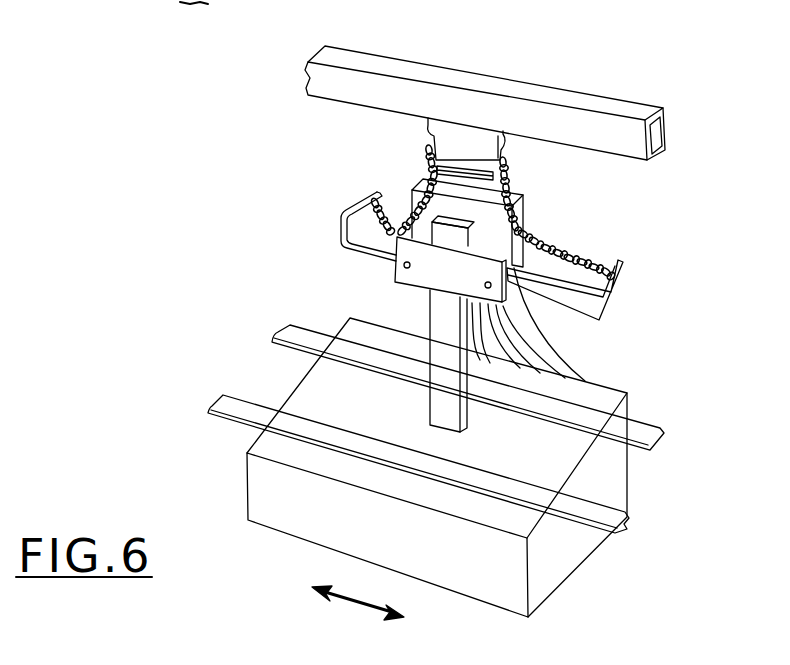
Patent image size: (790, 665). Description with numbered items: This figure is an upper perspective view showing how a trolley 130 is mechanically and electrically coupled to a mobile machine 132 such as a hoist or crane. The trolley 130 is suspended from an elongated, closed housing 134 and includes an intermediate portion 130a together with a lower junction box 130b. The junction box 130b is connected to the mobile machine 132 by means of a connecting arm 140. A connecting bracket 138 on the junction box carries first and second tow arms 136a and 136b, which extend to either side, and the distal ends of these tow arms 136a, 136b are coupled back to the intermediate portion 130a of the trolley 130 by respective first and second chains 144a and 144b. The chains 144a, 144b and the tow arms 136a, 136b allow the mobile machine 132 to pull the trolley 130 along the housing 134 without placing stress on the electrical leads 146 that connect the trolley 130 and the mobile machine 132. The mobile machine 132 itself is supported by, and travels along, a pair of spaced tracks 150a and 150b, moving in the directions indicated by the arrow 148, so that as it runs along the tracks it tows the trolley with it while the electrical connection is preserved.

The trolley 130 is at (410, 124).
The intermediate portion 130a is at (500, 152).
The lower junction box 130b is at (528, 212).
The mobile machine 132 is at (414, 546).
The elongated, closed housing 134 is at (515, 90).
The first tow arm 136a is at (343, 222).
The second tow arm 136b is at (618, 288).
The connecting bracket 138 is at (475, 291).
The connecting arm 140 is at (443, 343).
The first chain 144a is at (405, 218).
The second chain 144b is at (590, 254).
The electrical leads 146 is at (580, 349).
The arrow 148 is at (343, 600).
The first track 150a is at (292, 337).
The second track 150b is at (209, 411).